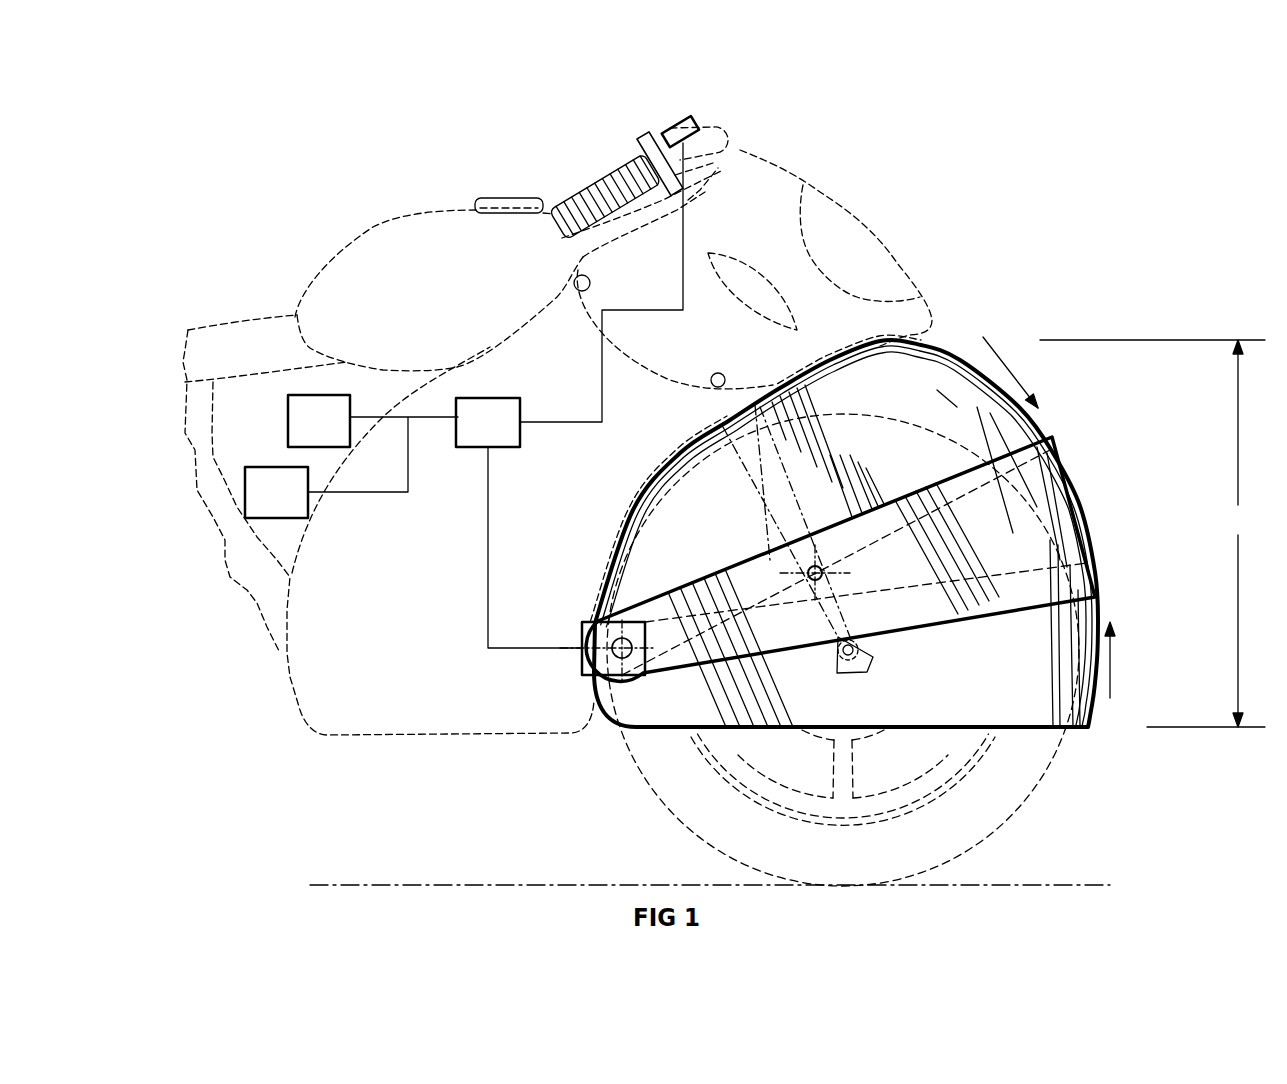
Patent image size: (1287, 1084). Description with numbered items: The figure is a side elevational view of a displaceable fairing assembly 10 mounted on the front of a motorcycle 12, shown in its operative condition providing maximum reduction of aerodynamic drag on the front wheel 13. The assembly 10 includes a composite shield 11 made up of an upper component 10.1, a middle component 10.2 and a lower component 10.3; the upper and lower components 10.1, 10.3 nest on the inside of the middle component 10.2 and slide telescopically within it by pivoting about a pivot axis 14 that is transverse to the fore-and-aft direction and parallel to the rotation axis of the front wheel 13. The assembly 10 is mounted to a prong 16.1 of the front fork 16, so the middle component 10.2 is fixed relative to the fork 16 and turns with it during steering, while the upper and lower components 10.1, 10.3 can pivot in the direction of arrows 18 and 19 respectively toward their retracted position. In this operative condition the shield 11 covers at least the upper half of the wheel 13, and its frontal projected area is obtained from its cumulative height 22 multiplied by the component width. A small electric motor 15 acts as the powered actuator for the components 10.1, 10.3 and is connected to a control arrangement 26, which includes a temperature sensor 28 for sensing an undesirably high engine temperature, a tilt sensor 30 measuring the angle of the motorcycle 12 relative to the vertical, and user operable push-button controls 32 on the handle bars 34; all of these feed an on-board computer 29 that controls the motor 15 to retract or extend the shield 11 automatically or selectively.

The displaceable fairing assembly 10 is at (1075, 420).
The upper component 10.1 is at (950, 346).
The middle component 10.2 is at (1075, 487).
The lower component 10.3 is at (1092, 710).
The composite shield 11 is at (1113, 418).
The motorcycle 12 is at (783, 152).
The front wheel 13 is at (990, 800).
The pivot axis 14 is at (622, 728).
The electric motor 15 is at (634, 622).
The front fork 16 is at (723, 418).
The prong 16.1 is at (845, 672).
The arrow 18 is at (983, 337).
The arrow 19 is at (1110, 672).
The cumulative height 22 is at (1152, 533).
The control arrangement 26 is at (483, 395).
The temperature sensor 28 is at (262, 507).
The on-board computer 29 is at (474, 437).
The tilt sensor 30 is at (305, 436).
The user operable controls 32 is at (678, 118).
The handle bars 34 is at (612, 187).